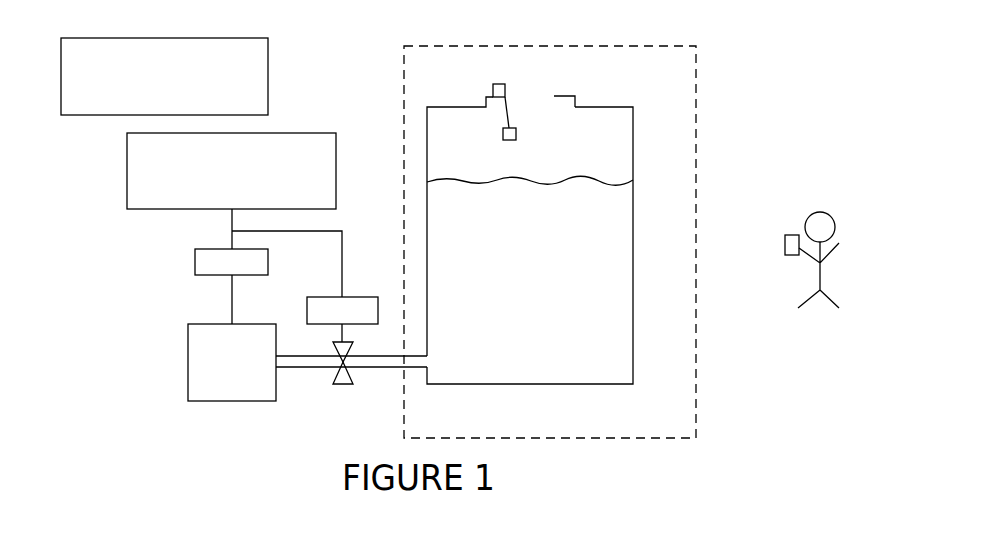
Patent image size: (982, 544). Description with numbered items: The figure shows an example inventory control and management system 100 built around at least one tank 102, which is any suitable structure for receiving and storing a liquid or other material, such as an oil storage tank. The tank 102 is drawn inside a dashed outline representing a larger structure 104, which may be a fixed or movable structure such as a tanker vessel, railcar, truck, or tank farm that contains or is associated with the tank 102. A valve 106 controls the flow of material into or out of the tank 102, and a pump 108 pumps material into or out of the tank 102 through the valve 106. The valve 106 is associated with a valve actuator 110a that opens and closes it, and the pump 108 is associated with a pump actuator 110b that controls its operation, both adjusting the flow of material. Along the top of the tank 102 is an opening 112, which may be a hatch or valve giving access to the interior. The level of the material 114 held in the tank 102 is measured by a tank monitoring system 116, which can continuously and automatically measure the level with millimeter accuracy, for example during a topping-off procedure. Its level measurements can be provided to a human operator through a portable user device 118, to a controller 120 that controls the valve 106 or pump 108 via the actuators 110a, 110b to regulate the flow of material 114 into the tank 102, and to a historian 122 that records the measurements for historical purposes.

The inventory control and management system 100 is at (757, 416).
The tank 102 is at (546, 386).
The larger structure 104 is at (622, 440).
The valve 106 is at (343, 386).
The pump 108 is at (220, 403).
The valve actuator 110a is at (342, 310).
The pump actuator 110b is at (231, 262).
The opening 112 is at (533, 105).
The material 114 is at (607, 221).
The tank monitoring system 116 is at (511, 93).
The user device 118 is at (789, 231).
The controller 120 is at (166, 212).
The historian 122 is at (100, 120).